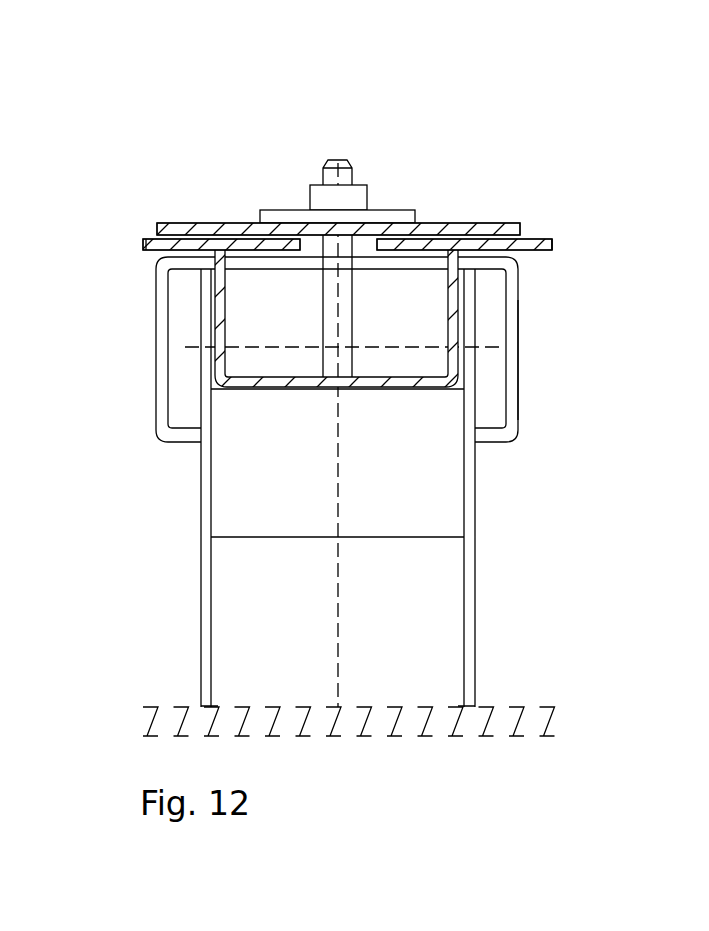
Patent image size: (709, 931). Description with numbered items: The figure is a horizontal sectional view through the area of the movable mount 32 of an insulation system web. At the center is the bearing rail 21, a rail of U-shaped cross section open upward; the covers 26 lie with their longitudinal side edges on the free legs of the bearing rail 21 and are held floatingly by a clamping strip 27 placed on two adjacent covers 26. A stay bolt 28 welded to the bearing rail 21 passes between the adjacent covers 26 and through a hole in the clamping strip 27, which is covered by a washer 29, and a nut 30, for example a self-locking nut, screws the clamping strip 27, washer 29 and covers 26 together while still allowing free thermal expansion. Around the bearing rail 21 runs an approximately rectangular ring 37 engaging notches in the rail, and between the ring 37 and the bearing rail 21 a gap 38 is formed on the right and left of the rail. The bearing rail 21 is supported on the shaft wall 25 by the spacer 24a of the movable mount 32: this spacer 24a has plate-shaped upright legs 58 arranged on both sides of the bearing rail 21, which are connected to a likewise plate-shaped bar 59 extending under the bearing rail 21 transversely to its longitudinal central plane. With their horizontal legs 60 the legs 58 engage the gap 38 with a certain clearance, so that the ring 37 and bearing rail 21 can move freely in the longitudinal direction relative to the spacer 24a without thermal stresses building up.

The bearing rail 21 is at (457, 313).
The spacer 24a is at (480, 602).
The shaft wall 25 is at (408, 718).
The cover 26 is at (146, 240).
The clamping strip 27 is at (488, 228).
The stay bolt 28 is at (343, 177).
The washer 29 is at (383, 217).
The nut 30 is at (312, 200).
The movable mount 32 is at (585, 325).
The ring 37 is at (513, 382).
The gap 38 is at (487, 400).
The leg 58 is at (203, 662).
The bar 59 is at (270, 477).
The horizontal leg 60 is at (468, 292).